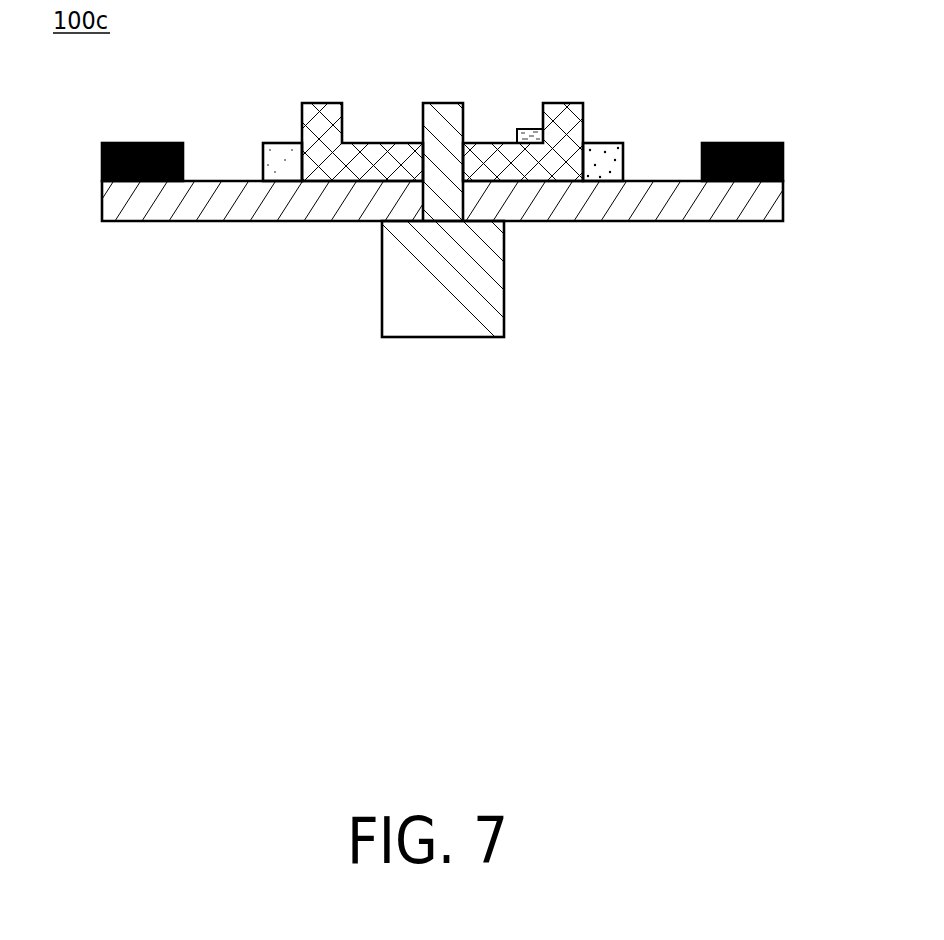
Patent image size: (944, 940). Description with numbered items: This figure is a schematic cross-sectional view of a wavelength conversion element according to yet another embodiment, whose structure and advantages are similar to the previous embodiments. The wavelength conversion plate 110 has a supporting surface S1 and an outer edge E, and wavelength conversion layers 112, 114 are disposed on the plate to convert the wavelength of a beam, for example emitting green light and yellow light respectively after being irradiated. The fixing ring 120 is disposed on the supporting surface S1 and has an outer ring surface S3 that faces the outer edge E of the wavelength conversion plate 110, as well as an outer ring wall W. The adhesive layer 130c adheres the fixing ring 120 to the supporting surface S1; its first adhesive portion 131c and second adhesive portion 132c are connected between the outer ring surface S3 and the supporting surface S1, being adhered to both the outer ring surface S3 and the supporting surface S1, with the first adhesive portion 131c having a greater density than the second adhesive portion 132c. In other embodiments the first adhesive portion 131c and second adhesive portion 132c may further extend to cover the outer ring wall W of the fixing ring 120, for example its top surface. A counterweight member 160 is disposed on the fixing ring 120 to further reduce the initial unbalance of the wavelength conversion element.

The wavelength conversion plate 110 is at (218, 200).
The wavelength conversion layer 112 is at (143, 153).
The wavelength conversion layer 114 is at (745, 150).
The fixing ring 120 is at (383, 157).
The adhesive layer 130c is at (551, 470).
The first adhesive portion 131c is at (600, 165).
The second adhesive portion 132c is at (277, 172).
The counterweight member 160 is at (532, 137).
The supporting surface S1 is at (667, 180).
The outer ring surface S3 is at (299, 156).
The outer ring wall W is at (322, 112).
The outer edge E is at (786, 202).